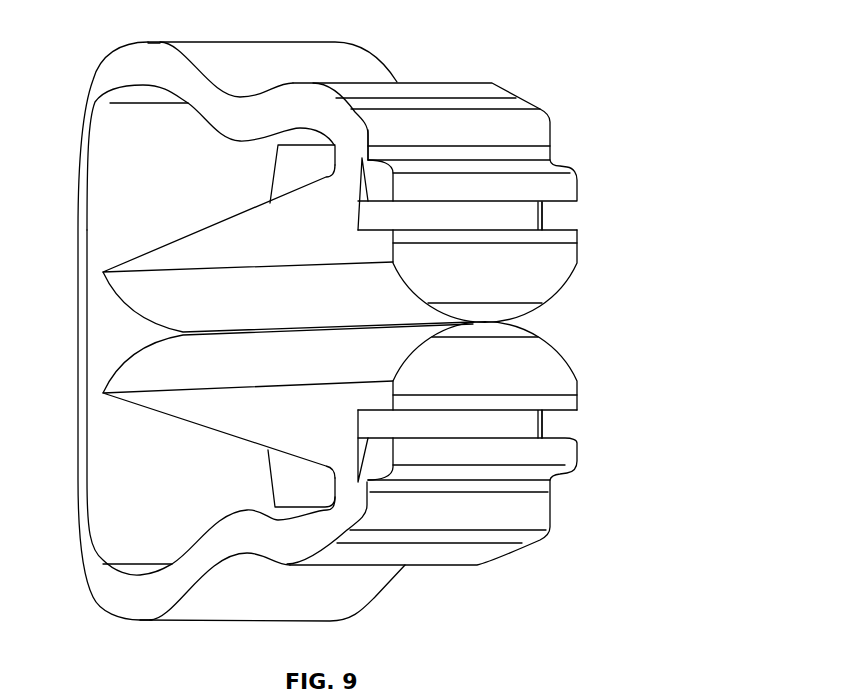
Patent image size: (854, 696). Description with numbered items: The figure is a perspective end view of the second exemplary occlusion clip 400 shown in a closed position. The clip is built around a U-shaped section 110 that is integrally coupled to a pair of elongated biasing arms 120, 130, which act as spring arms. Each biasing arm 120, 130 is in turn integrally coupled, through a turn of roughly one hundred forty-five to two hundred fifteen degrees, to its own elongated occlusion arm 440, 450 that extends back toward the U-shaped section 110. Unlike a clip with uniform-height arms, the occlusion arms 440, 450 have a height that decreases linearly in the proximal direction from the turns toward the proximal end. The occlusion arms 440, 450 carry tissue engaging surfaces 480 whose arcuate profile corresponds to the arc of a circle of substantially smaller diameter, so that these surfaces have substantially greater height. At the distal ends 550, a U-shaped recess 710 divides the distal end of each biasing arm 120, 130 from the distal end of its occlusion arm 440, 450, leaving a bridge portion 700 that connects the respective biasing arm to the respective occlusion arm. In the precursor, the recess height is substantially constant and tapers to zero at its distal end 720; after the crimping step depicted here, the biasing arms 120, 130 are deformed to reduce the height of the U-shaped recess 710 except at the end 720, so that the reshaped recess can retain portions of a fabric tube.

The second exemplary occlusion clip 400 is at (668, 28).
The U-shaped section 110 is at (78, 347).
The first elongated biasing arm 120 is at (130, 63).
The second elongated biasing arm 130 is at (138, 603).
The first occlusion arm 440 is at (263, 253).
The second occlusion arm 450 is at (280, 415).
The tissue engaging surfaces 480 is at (322, 303).
The distal ends 550 is at (563, 187).
The bridge portion 700 is at (357, 127).
The U-shaped recess 710 is at (576, 221).
The distal end of the U-shaped recess 720 is at (358, 208).